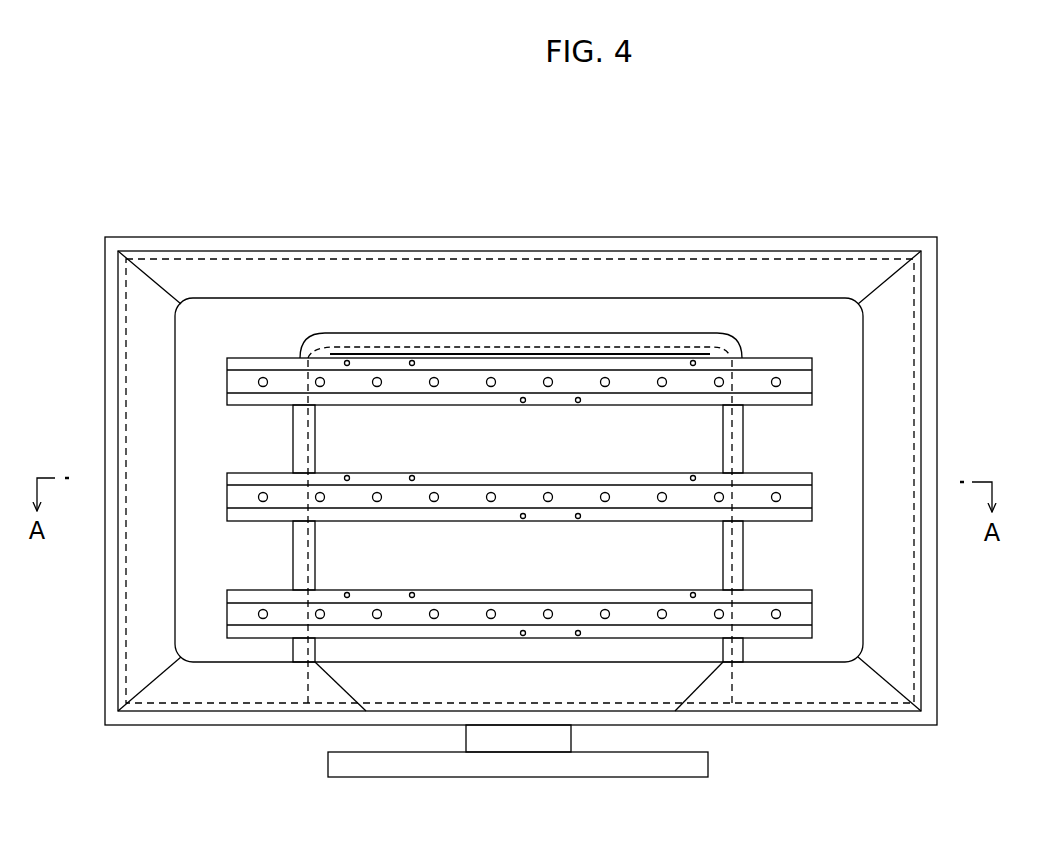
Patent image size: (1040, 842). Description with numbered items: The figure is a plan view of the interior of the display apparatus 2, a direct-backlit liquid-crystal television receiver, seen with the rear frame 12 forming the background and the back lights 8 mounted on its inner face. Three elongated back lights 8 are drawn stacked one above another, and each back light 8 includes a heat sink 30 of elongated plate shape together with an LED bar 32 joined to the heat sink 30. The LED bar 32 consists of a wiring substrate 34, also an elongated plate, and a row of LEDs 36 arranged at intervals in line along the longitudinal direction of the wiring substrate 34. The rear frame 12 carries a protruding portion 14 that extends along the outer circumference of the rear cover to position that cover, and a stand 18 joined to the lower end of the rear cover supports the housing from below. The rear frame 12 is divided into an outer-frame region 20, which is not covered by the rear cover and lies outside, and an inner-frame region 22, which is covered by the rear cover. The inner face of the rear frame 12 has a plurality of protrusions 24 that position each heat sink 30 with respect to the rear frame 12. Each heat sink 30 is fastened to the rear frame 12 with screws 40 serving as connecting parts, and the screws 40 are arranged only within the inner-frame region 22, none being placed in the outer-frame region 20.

The display apparatus 2 is at (880, 203).
The back lights 8 is at (221, 608).
The rear frame 12 is at (927, 303).
The protruding portion 14 is at (428, 347).
The stand 18 is at (690, 763).
The outer-frame region 20 is at (883, 352).
The inner-frame region 22 is at (712, 426).
The protrusions 24 is at (412, 360).
The heat sink 30 is at (798, 480).
The LED bar 32 is at (543, 468).
The wiring substrate 34 is at (790, 376).
The LEDs 36 is at (721, 378).
The screws 40 is at (347, 360).